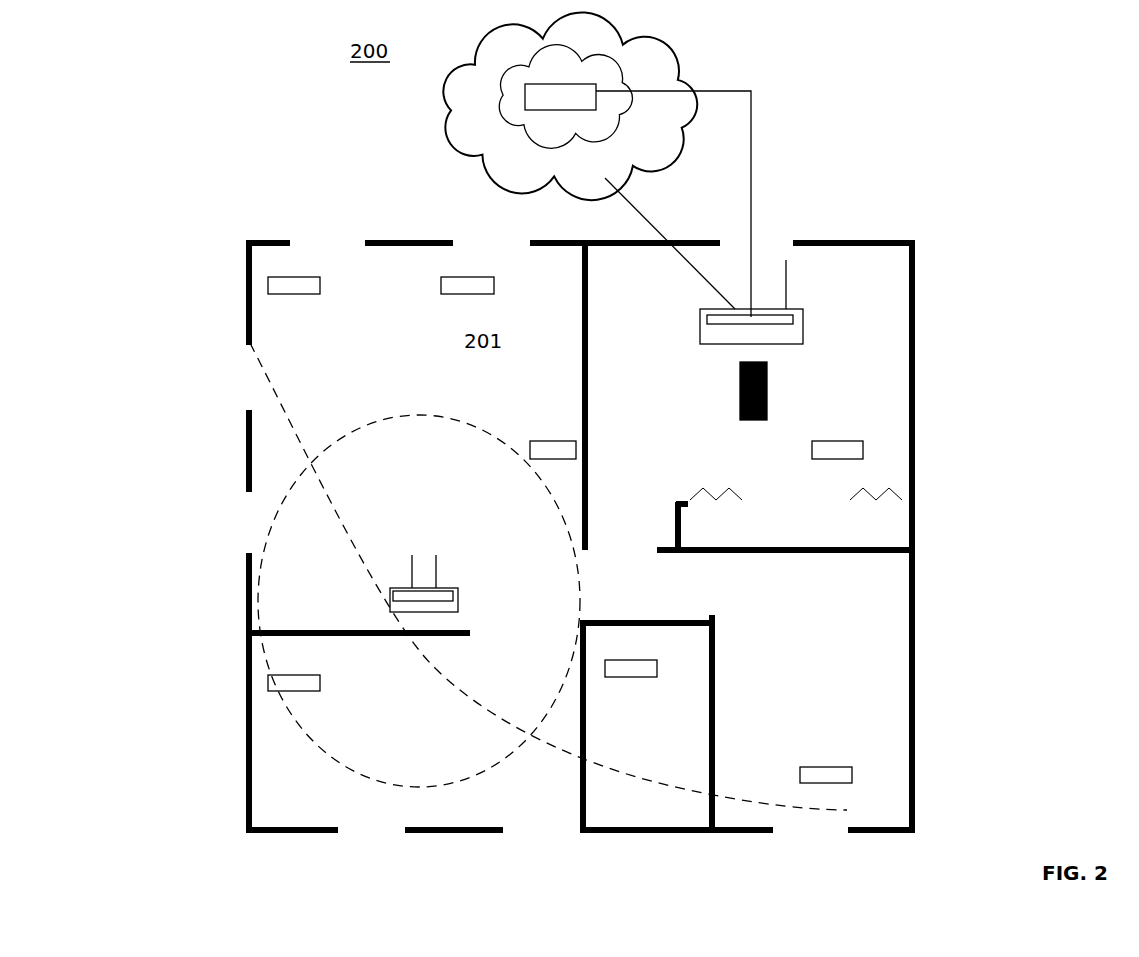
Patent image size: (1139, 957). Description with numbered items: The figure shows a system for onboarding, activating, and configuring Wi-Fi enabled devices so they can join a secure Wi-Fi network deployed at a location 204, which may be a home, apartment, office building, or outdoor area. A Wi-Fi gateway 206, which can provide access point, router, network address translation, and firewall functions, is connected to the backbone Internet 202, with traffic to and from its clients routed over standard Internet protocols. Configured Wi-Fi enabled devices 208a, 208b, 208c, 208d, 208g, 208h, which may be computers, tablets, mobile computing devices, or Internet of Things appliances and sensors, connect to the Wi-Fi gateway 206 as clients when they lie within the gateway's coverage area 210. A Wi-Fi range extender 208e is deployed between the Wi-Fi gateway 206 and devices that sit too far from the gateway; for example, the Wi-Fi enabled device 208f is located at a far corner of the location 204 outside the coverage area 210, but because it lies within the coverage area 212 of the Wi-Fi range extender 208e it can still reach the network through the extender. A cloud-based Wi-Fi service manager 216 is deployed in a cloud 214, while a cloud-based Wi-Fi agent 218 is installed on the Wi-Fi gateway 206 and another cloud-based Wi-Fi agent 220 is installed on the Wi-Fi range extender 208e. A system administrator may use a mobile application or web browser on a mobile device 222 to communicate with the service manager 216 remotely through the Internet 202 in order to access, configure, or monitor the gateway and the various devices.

The backbone Internet 202 is at (665, 75).
The location 204 is at (880, 243).
The Wi-Fi gateway 206 is at (803, 325).
The Wi-Fi enabled device 208a is at (320, 285).
The Wi-Fi enabled device 208b is at (494, 285).
The Wi-Fi enabled device 208c is at (576, 450).
The Wi-Fi enabled device 208d is at (885, 425).
The Wi-Fi range extender 208e is at (447, 588).
The Wi-Fi enabled device 208f is at (320, 683).
The Wi-Fi enabled device 208g is at (627, 662).
The Wi-Fi enabled device 208h is at (852, 775).
The coverage area 210 is at (263, 427).
The coverage area 212 is at (280, 717).
The cloud 214 is at (582, 58).
The cloud-based Wi-Fi service manager 216 is at (597, 82).
The cloud-based Wi-Fi agent 218 is at (725, 320).
The cloud-based Wi-Fi agent 220 is at (450, 597).
The mobile device 222 is at (767, 390).